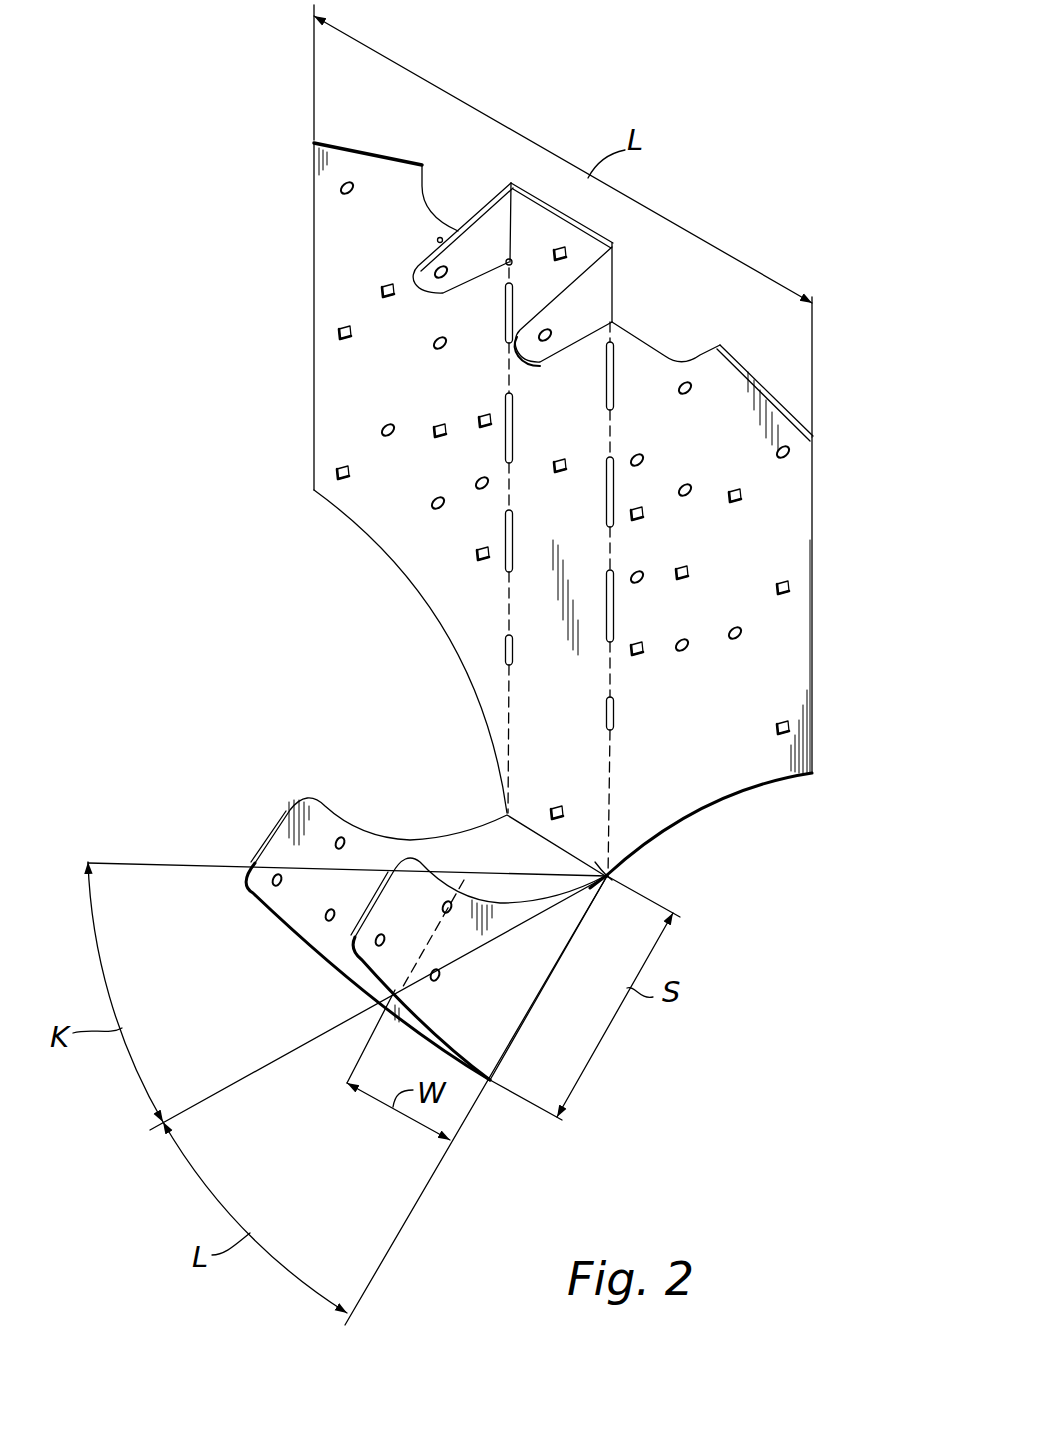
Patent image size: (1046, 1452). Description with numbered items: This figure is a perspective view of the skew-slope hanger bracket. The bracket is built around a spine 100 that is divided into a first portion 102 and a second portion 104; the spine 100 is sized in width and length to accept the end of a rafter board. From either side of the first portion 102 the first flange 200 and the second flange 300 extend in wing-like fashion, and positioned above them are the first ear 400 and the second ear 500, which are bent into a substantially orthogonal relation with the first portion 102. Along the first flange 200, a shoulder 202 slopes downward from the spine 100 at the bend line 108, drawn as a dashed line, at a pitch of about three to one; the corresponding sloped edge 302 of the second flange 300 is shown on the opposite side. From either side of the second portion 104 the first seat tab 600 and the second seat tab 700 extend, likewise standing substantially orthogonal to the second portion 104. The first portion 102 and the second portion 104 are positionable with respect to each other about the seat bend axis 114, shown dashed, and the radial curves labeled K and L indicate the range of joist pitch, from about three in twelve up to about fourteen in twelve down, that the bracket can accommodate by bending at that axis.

The spine 100 is at (562, 229).
The first portion 102 is at (582, 432).
The second portion 104 is at (503, 838).
The bend line 108 is at (507, 742).
The seat bend axis 114 is at (600, 860).
The first flange 200 is at (328, 362).
The shoulder 202 is at (349, 143).
The second flange 300 is at (793, 540).
The top edge of second side plate 302 is at (768, 388).
The first ear 400 is at (420, 262).
The second ear 500 is at (592, 302).
The first seat tab 600 is at (303, 918).
The second seat tab 700 is at (493, 1012).